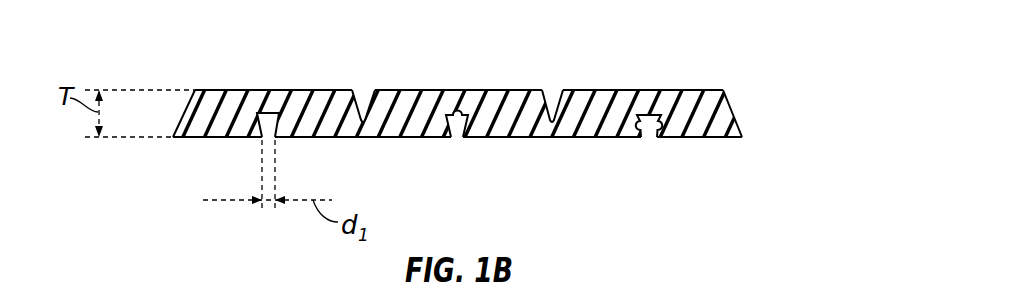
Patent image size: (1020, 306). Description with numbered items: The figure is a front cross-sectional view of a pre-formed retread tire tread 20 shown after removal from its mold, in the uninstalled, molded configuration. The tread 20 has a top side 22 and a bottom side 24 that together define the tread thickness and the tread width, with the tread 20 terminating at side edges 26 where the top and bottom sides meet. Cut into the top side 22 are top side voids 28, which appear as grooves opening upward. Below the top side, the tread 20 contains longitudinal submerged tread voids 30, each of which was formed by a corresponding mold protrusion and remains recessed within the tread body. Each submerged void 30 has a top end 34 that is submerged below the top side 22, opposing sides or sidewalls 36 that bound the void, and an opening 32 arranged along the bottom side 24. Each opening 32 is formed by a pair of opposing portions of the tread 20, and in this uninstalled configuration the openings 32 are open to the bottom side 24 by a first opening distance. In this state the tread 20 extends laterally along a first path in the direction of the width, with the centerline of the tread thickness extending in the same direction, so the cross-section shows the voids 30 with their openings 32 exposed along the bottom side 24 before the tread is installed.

The pre-formed retread tire tread 20 is at (718, 41).
The top side 22 is at (612, 90).
The bottom side 24 is at (720, 138).
The side edge 26 is at (179, 125).
The top side voids 28 is at (362, 120).
The longitudinal submerged tread voids 30 is at (258, 117).
The openings 32 is at (261, 138).
The top end 34 is at (453, 113).
The opposing sides or sidewalls 36 is at (643, 127).